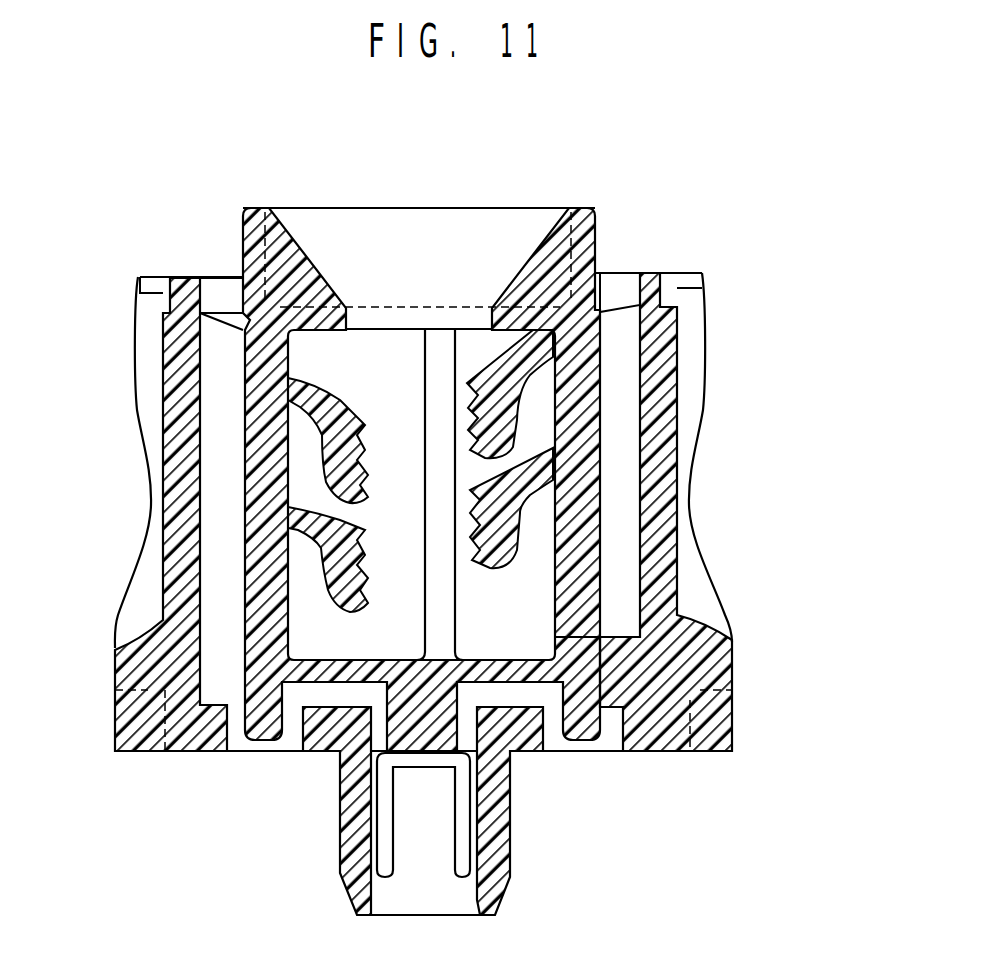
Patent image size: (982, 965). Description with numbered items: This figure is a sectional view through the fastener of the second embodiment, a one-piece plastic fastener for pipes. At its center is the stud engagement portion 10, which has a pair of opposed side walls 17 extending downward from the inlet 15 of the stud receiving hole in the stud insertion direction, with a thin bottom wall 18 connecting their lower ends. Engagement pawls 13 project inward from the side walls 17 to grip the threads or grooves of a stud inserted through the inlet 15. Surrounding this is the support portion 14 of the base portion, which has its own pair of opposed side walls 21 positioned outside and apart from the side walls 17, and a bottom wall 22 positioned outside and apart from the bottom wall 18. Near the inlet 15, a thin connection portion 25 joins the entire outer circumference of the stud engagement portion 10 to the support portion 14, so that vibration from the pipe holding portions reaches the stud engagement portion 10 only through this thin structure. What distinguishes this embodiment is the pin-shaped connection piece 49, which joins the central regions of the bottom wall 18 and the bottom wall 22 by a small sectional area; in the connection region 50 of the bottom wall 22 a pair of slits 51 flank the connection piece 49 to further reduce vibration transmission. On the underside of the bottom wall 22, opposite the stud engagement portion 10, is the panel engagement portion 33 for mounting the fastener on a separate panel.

The stud engagement portion 10 is at (660, 246).
The engagement pawls 13 is at (338, 404).
The support portion 14 is at (150, 449).
The inlet 15 is at (383, 320).
The side walls 17 is at (250, 505).
The bottom wall 18 is at (353, 660).
The side walls 21 is at (677, 333).
The bottom wall 22 is at (317, 742).
The thin connection portion 25 is at (218, 312).
The panel engagement portion 33 is at (340, 899).
The connection piece 49 is at (655, 632).
The connection region 50 is at (483, 812).
The slits 51 is at (342, 828).